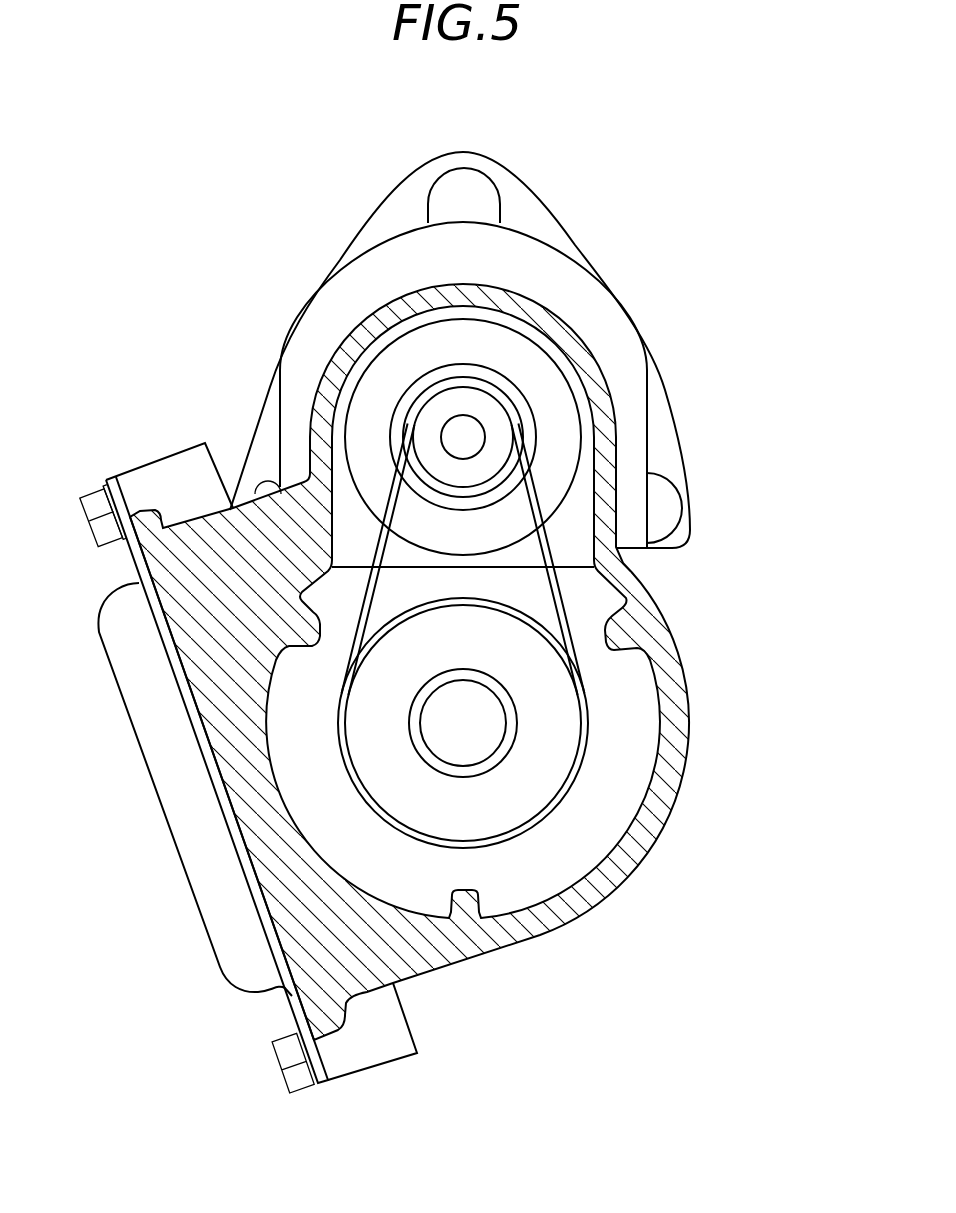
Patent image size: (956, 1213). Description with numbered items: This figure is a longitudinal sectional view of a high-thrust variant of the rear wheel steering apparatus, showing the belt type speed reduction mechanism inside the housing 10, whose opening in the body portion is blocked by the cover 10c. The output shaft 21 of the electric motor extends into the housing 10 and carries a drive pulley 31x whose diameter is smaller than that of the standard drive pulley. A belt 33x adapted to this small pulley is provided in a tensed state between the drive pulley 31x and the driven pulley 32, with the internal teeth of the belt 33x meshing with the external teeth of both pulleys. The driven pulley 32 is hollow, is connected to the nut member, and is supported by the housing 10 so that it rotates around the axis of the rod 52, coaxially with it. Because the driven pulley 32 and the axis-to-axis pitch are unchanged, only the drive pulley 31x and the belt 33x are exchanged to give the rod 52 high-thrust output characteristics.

The housing 10 is at (605, 272).
The cover 10c is at (180, 858).
The drive pulley 31x is at (491, 416).
The output shaft 21 is at (465, 440).
The belt 33x is at (568, 620).
The driven pulley 32 is at (546, 754).
The rod 52 is at (460, 752).